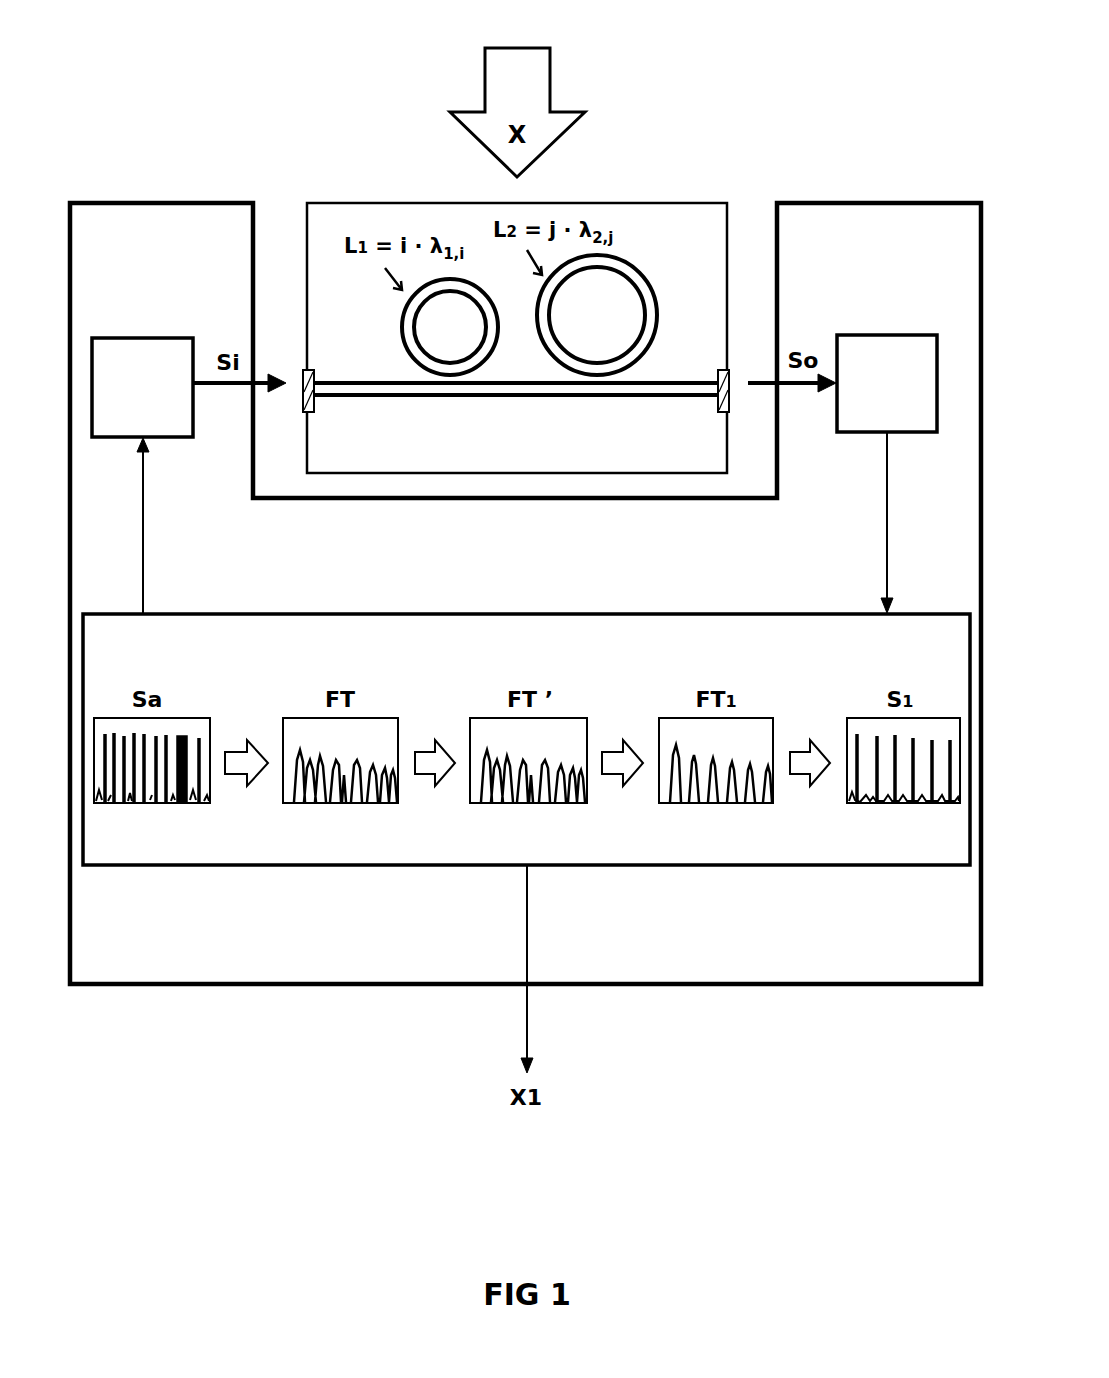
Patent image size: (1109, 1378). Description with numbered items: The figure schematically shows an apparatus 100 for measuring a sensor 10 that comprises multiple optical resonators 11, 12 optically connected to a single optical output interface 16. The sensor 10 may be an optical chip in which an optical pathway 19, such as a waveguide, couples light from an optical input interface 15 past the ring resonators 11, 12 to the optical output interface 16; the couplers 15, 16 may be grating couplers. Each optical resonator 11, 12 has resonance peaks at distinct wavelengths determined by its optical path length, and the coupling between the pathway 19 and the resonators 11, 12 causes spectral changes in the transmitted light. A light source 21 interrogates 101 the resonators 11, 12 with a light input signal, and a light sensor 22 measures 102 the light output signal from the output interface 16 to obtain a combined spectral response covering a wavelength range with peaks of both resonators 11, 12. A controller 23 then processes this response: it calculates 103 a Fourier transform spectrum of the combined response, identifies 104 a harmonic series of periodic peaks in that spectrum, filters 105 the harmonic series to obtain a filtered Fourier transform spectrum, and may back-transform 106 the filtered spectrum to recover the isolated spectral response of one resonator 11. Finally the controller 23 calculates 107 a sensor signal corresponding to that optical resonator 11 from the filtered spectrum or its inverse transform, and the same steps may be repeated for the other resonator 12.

The sensor 10 is at (684, 258).
The optical resonator 11 is at (437, 344).
The optical resonator 12 is at (583, 332).
The optical input interface 15 is at (294, 410).
The optical output interface 16 is at (738, 410).
The optical pathway 19 is at (514, 408).
The light source 21 is at (129, 402).
The light sensor 22 is at (873, 398).
The controller 23 is at (929, 652).
The apparatus 100 is at (922, 963).
The interrogating 101 is at (166, 526).
The measuring 102 is at (912, 522).
The calculating a Fourier transform spectrum 103 is at (247, 745).
The identifying a harmonic series 104 is at (435, 745).
The filtering 105 is at (622, 745).
The back-transforming 106 is at (810, 745).
The calculating a sensor signal 107 is at (551, 969).